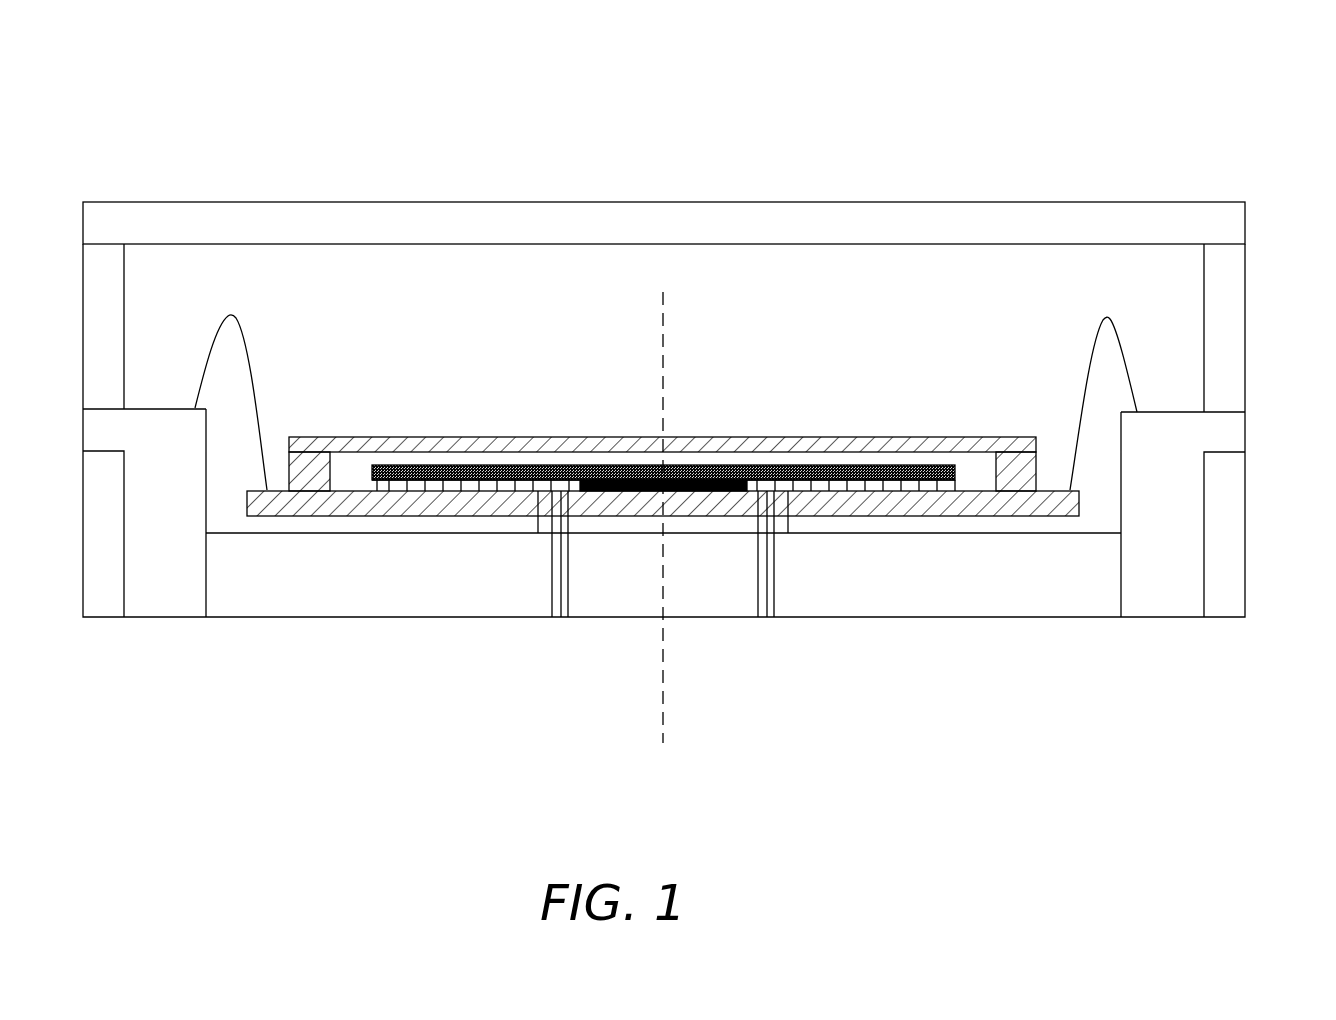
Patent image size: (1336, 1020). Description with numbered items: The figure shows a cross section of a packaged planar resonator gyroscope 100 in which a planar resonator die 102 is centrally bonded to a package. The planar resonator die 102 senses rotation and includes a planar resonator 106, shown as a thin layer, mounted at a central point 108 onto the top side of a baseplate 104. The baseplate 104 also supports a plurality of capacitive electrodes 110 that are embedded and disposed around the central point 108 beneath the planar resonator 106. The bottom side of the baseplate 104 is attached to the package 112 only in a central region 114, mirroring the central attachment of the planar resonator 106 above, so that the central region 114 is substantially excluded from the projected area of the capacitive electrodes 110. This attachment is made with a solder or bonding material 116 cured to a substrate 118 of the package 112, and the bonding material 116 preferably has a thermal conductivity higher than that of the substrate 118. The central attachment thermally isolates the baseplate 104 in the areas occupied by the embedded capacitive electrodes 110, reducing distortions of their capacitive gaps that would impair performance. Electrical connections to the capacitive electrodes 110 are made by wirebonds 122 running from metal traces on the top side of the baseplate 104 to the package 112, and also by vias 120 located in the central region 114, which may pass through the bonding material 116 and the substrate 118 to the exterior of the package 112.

The packaged planar resonator gyroscope 100 is at (1190, 110).
The planar resonator die 102 is at (923, 419).
The baseplate 104 is at (988, 507).
The planar resonator 106 is at (841, 468).
The central point 108 is at (717, 492).
The capacitive electrodes 110 is at (870, 488).
The package 112 is at (1211, 213).
The central region 114 is at (623, 540).
The bonding material 116 is at (648, 527).
The substrate 118 is at (1093, 608).
The vias 120 is at (781, 580).
The wirebonds 122 is at (1145, 356).